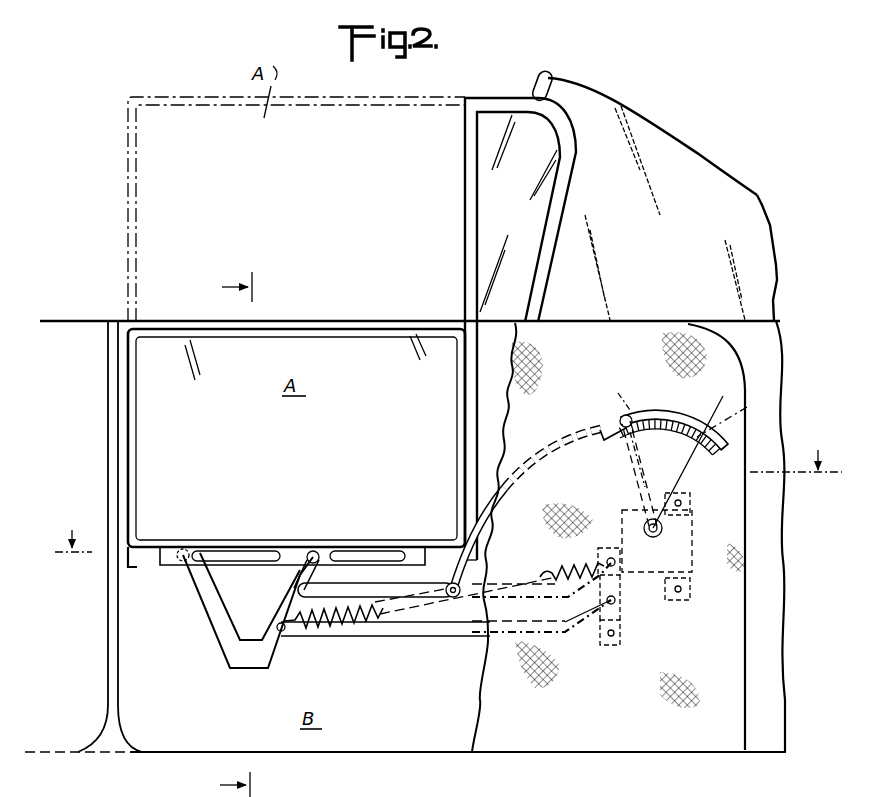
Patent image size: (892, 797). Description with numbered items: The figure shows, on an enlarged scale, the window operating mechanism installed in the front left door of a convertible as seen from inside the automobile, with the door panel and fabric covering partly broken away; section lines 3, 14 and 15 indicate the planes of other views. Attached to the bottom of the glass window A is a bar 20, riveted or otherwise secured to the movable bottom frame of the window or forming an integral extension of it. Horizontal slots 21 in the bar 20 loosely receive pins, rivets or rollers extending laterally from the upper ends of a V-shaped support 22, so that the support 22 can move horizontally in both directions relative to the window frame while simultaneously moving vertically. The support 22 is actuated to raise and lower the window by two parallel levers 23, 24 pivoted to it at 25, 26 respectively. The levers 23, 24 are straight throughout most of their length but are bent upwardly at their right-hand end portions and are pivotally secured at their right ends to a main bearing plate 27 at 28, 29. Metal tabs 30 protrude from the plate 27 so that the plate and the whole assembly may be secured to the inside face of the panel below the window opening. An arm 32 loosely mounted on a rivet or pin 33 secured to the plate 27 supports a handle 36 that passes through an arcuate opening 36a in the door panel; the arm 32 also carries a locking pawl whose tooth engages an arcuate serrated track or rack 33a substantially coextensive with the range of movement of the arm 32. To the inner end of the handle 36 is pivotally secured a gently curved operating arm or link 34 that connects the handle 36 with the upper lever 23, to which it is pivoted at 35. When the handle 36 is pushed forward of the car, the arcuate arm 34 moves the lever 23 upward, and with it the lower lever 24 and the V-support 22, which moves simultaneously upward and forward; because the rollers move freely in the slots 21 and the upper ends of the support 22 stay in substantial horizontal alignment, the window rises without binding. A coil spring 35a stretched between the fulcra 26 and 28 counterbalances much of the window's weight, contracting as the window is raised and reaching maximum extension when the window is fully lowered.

The section line 3- 3 is at (448, 516).
The section line 14- 14 is at (246, 534).
The pivot / section line 15- 15 is at (598, 396).
The bar 20 is at (408, 558).
The horizontal slots 21 is at (240, 552).
The V-shaped support 22 is at (212, 605).
The upper parallel lever 23 is at (402, 595).
The lower parallel lever 24 is at (442, 638).
The pivot 25 is at (312, 550).
The pivot (fulcrum) 26 is at (283, 634).
The main bearing plate 27 is at (672, 546).
The pivot (fulcrum) 28 is at (620, 562).
The pivot 29 is at (618, 602).
The metal tabs 30 is at (690, 502).
The arm 32 is at (640, 484).
The rivet or pin 33 is at (644, 528).
The arcuate serrated track or rack 33a is at (738, 418).
The operating arm or link 34 is at (543, 470).
The pivot 35 is at (450, 583).
The coil spring 35a is at (552, 572).
The handle 36 is at (710, 413).
The arcuate opening 36a is at (730, 448).